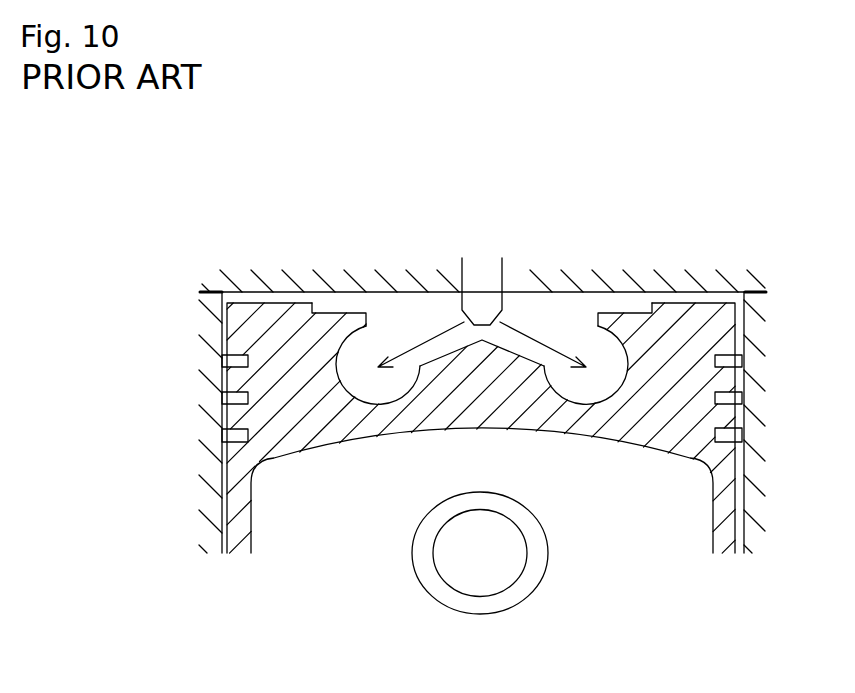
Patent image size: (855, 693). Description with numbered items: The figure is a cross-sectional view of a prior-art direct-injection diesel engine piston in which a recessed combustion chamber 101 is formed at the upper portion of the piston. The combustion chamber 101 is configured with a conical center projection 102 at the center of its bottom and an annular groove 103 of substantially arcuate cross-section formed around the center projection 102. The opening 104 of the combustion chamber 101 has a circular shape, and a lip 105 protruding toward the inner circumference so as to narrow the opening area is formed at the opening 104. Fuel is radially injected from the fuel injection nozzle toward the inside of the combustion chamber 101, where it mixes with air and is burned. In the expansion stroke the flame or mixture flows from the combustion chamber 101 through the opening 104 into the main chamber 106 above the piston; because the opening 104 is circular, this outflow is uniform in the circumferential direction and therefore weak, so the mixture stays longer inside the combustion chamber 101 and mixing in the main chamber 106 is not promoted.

The combustion chamber 101 is at (593, 383).
The center projection 102 is at (545, 323).
The annular groove 103 is at (363, 372).
The opening 104 is at (368, 327).
The lip 105 is at (347, 314).
The main chamber 106 is at (642, 306).